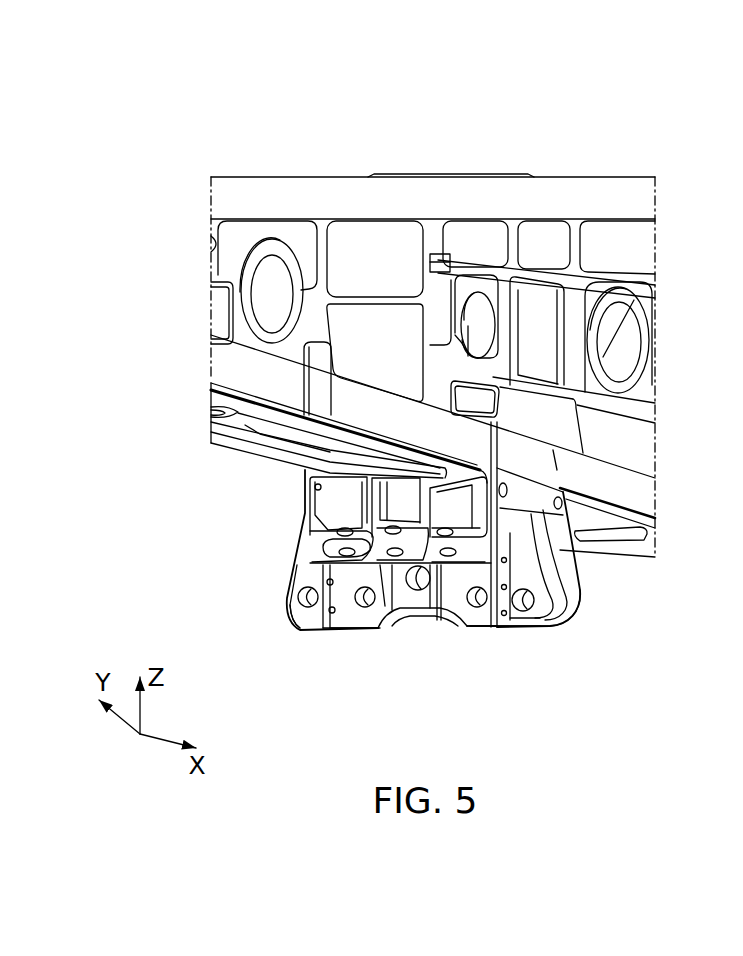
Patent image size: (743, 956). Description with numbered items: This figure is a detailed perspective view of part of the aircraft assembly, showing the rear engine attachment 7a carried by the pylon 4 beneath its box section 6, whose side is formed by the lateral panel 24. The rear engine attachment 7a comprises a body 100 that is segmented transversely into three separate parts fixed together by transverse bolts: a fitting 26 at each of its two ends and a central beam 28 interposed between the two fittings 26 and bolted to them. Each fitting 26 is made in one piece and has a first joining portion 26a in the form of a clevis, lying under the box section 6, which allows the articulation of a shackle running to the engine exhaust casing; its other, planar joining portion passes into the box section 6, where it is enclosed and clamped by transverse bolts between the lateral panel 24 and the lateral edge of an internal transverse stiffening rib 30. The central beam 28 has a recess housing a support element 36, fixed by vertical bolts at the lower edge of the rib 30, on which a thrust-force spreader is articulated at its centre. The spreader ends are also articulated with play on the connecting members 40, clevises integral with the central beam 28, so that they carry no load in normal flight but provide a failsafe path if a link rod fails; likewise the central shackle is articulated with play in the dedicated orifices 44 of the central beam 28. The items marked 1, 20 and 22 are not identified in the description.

The vehicle body 1 is at (598, 164).
The pylon 4 is at (258, 152).
The box section 6 is at (351, 176).
The bead 20 is at (440, 175).
The lateral panel 24 is at (497, 192).
The internal transverse stiffening rib 30 is at (480, 317).
The support plate 22 is at (218, 409).
The support element 36 is at (404, 498).
The fitting 26 is at (282, 543).
The first joining portion 26a is at (297, 630).
The rear engine attachment 7a is at (612, 612).
The connecting member 40 is at (313, 553).
The dedicated orifice 44 is at (414, 589).
The central beam 28 is at (453, 630).
The body 100 is at (417, 630).